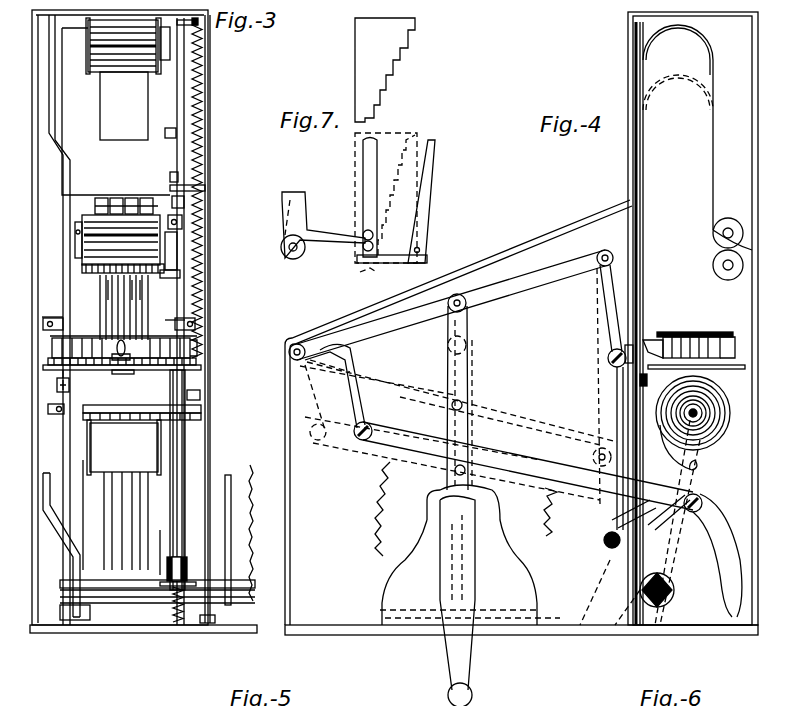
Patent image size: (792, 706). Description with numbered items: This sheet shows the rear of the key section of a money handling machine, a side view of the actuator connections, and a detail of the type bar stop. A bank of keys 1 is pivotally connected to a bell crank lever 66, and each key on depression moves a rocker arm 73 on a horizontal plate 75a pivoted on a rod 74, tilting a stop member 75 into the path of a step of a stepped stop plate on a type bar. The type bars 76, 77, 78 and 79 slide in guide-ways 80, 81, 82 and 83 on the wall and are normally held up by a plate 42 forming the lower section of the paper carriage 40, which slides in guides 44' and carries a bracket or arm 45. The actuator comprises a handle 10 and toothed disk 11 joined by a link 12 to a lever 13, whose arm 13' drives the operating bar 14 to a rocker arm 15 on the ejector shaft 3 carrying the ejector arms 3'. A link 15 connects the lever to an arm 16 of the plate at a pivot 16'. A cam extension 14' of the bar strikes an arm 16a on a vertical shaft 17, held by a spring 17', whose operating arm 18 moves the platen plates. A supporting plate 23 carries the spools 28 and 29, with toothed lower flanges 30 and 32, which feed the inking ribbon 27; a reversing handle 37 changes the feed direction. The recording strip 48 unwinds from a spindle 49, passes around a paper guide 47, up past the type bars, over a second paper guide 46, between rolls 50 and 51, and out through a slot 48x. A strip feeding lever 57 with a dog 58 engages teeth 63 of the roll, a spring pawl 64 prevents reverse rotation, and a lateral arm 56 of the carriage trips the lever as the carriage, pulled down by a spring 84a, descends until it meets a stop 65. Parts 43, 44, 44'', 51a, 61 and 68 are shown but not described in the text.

In FIG. 7, the key 1 is at (370, 172).
In FIG. 3, the ejector shaft 3 is at (256, 533).
In FIG. 4, the ejector shaft 3 is at (665, 576).
In FIG. 3, the ejector arm 3' is at (248, 540).
In FIG. 4, the handle 10 is at (472, 665).
In FIG. 4, the toothed disk 11 is at (466, 509).
In FIG. 4, the link 12 is at (468, 327).
In FIG. 4, the lever 13 is at (447, 305).
In FIG. 4, the arm 13' is at (362, 392).
In FIG. 4, the operating bar 14 is at (523, 480).
In FIG. 3, the cam extension 14' is at (41, 545).
In FIG. 4, the cam extension 14' is at (718, 555).
In FIG. 4, the rocker arm / link 15 is at (600, 305).
In FIG. 3, the arm 16 is at (193, 564).
In FIG. 4, the arm 16 is at (613, 368).
In FIG. 4, the pivot 16' is at (603, 362).
In FIG. 3, the arm 16a is at (142, 585).
In FIG. 3, the vertical shaft 17 is at (202, 502).
In FIG. 3, the spring 17' is at (157, 615).
In FIG. 3, the operating arm 18 is at (186, 378).
In FIG. 4, the operating arm 18 is at (634, 162).
In FIG. 4, the supporting plate 23 is at (654, 378).
In FIG. 3, the inking ribbon 27 is at (50, 361).
In FIG. 4, the inking ribbon 27 is at (730, 345).
In FIG. 3, the spool 28 is at (195, 348).
In FIG. 3, the spool 29 is at (62, 350).
In FIG. 4, the spool 29 is at (700, 332).
In FIG. 3, the lower flange 30 is at (135, 372).
In FIG. 3, the lower flange 32 is at (45, 369).
In FIG. 4, the lower flange 32 is at (705, 360).
In FIG. 3, the handle 37 is at (125, 350).
In FIG. 3, the paper carriage 40 is at (55, 84).
In FIG. 4, the paper carriage 40 is at (642, 178).
In FIG. 3, the plate 42 is at (79, 382).
In FIG. 3, the bracket 43 is at (48, 410).
In FIG. 3, the bracket 44 is at (217, 397).
In FIG. 3, the guides 44' is at (211, 321).
In FIG. 3, the bracket 44'' is at (33, 324).
In FIG. 3, the bracket or arm 45 is at (57, 388).
In FIG. 4, the bracket or arm 45 is at (630, 385).
In FIG. 3, the paper guide 46 is at (152, 46).
In FIG. 4, the paper guide 46 is at (708, 42).
In FIG. 3, the paper guide 47 is at (124, 447).
In FIG. 4, the paper guide 47 is at (702, 468).
In FIG. 4, the recording strip / roll 48 is at (714, 165).
In FIG. 4, the slot 48x is at (752, 240).
In FIG. 3, the spindle 49 is at (200, 410).
In FIG. 4, the spindle 49 is at (700, 411).
In FIG. 3, the upper feed roll 50 is at (78, 228).
In FIG. 4, the upper feed roll 50 is at (740, 228).
In FIG. 3, the roll 51 is at (80, 252).
In FIG. 4, the roll 51 is at (740, 265).
In FIG. 3, the bracket 51a is at (182, 276).
In FIG. 3, the lateral arm 56 is at (176, 133).
In FIG. 3, the strip feeding lever 57 is at (184, 203).
In FIG. 3, the dog 58 is at (195, 165).
In FIG. 3, the plate 61 is at (180, 186).
In FIG. 3, the teeth 63 is at (182, 222).
In FIG. 3, the spring pawl 64 is at (177, 245).
In FIG. 3, the stop 65 is at (164, 546).
In FIG. 4, the stop 65 is at (636, 530).
In FIG. 7, the bell crank lever 66 is at (290, 207).
In FIG. 7, the pivot 68 is at (300, 260).
In FIG. 7, the rocker arm 73 is at (370, 258).
In FIG. 7, the rod 74 is at (425, 250).
In FIG. 7, the stop member 75 is at (424, 175).
In FIG. 7, the horizontal plate 75a is at (392, 262).
In FIG. 3, the type bar 76 is at (147, 197).
In FIG. 3, the type bar 77 is at (131, 197).
In FIG. 3, the type bar 78 is at (116, 197).
In FIG. 3, the type bar 79 is at (100, 197).
In FIG. 3, the guide-way 80 is at (112, 478).
In FIG. 7, the guide-way 80 is at (395, 38).
In FIG. 3, the guide-way 81 is at (118, 492).
In FIG. 3, the guide-way 82 is at (135, 500).
In FIG. 3, the guide-way 83 is at (148, 510).
In FIG. 3, the spring 84a is at (200, 62).